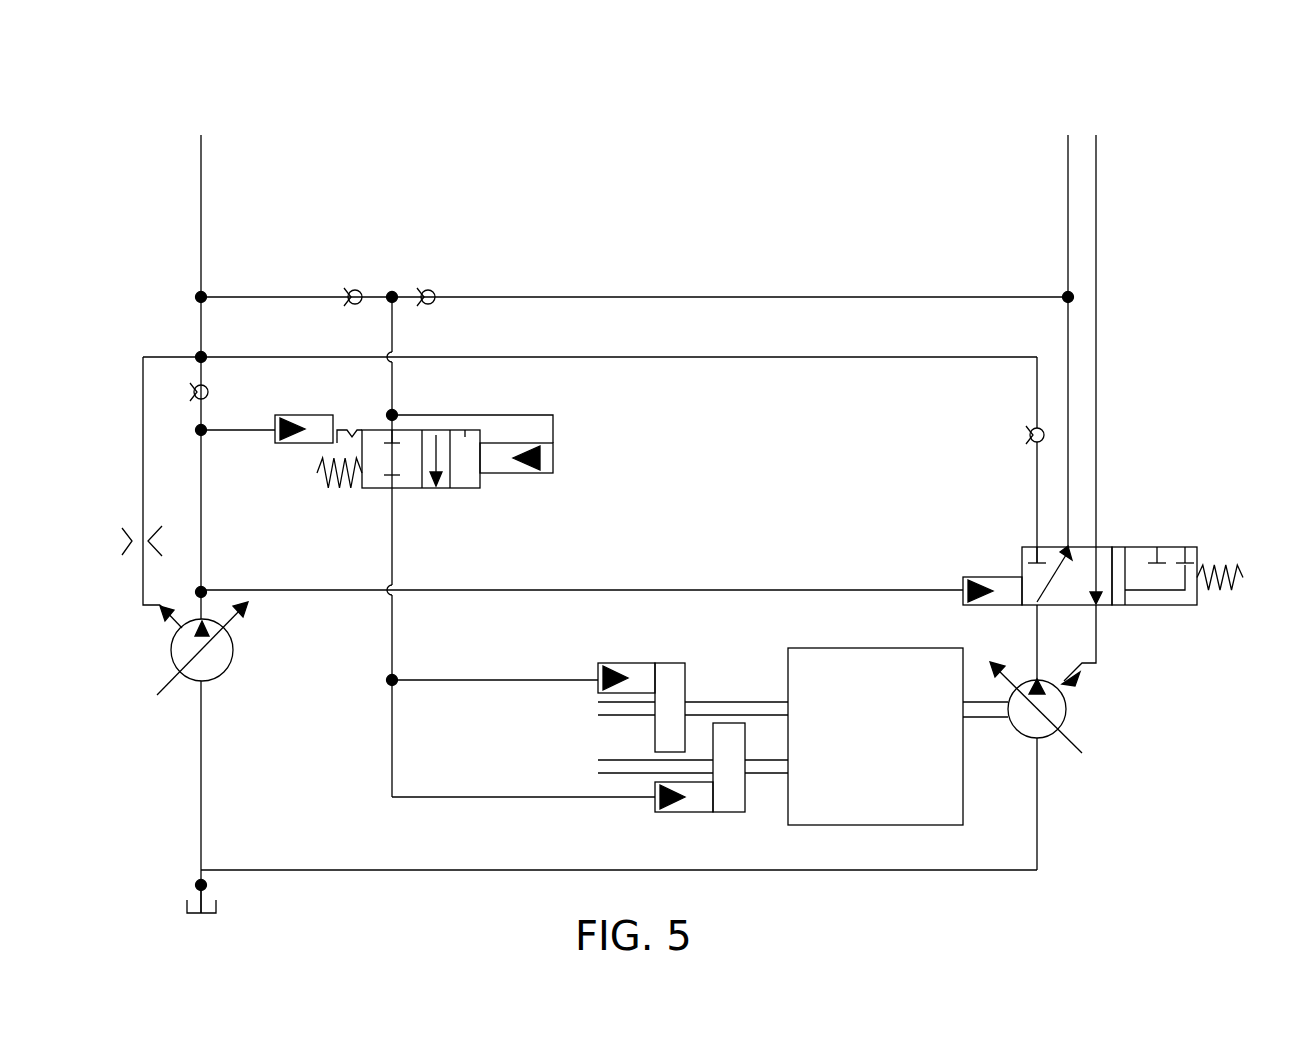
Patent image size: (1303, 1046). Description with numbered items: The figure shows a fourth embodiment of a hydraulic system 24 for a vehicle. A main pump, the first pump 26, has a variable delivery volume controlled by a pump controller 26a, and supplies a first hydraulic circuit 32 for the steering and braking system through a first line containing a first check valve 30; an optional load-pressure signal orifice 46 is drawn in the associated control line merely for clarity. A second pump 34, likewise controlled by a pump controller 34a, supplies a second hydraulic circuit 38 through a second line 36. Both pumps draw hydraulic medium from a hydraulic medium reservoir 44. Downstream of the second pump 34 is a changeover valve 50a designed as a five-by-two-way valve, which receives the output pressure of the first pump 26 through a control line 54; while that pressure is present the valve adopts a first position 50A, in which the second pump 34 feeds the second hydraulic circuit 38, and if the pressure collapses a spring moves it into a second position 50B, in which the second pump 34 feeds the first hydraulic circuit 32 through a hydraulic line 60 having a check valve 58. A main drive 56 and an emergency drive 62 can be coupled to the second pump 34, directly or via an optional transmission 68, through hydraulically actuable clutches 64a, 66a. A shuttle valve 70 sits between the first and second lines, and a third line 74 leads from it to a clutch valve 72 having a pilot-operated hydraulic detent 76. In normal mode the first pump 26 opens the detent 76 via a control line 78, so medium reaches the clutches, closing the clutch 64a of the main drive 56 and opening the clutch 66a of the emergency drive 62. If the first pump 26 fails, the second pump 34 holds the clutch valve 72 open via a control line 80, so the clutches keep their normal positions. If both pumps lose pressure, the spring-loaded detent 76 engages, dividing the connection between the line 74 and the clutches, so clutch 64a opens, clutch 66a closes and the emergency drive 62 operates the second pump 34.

The hydraulic system 24 is at (702, 107).
The first pump 26 is at (195, 680).
The pump controller 26a is at (165, 630).
The first check valve 30 is at (193, 396).
The first hydraulic circuit 32 is at (201, 226).
The second pump 34 is at (1060, 740).
The pump controller 34a is at (1068, 710).
The second line 36 is at (1068, 330).
The second hydraulic circuit 38 is at (1068, 200).
The hydraulic medium reservoir 44 is at (187, 910).
The load-pressure signal orifice 46 is at (127, 530).
The first position 50A is at (992, 558).
The changeover valve 50a is at (1128, 527).
The second position 50B is at (1172, 527).
The control line 54 is at (688, 588).
The main drive 56 is at (612, 707).
The check valve 58 is at (1030, 435).
The hydraulic line 60 is at (1037, 500).
The emergency drive 62 is at (610, 765).
The clutch 64a is at (690, 670).
The second clutch 66a is at (745, 800).
The transmission 68 is at (862, 750).
The shuttle valve 70 is at (392, 255).
The clutch valve 72 is at (473, 503).
The third line 74 is at (395, 388).
The hydraulic detent 76 is at (350, 437).
The control line 78 is at (240, 427).
The control line 80 is at (556, 442).